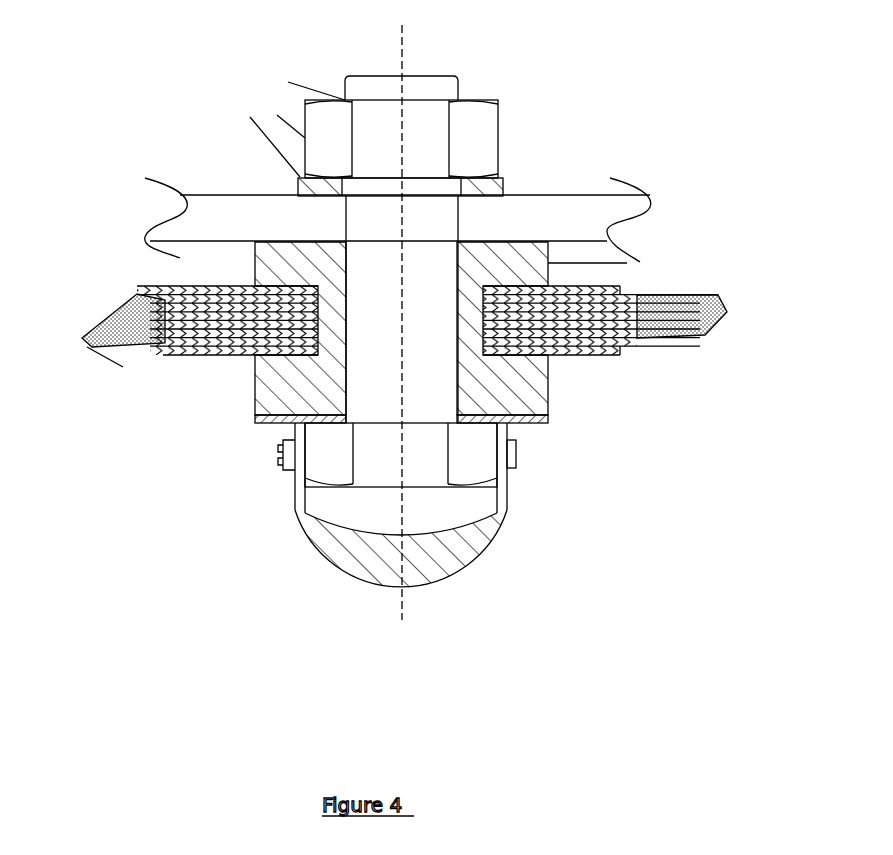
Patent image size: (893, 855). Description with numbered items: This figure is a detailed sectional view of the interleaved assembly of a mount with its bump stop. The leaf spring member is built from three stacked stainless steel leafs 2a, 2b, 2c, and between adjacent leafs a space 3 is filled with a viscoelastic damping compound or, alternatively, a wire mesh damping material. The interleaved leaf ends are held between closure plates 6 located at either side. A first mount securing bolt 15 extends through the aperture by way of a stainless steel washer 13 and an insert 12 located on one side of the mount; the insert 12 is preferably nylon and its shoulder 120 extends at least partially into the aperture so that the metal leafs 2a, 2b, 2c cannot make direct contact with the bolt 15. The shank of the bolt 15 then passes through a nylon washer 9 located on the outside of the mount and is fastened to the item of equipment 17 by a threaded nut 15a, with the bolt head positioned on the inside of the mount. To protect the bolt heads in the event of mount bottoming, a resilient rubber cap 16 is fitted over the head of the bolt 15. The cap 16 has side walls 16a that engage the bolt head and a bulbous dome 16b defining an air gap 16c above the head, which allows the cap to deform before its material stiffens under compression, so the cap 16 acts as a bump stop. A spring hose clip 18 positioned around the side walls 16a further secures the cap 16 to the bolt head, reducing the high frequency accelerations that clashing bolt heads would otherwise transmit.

The leaf 2a is at (185, 307).
The leaf 2b is at (215, 323).
The leaf 2c is at (138, 340).
The space 3 is at (97, 328).
The closure plate 6 is at (175, 258).
The washer 9 is at (628, 257).
The insert 12 is at (550, 407).
The washer 13 is at (250, 425).
The first mount securing bolt 15 is at (457, 280).
The threaded nut 15a is at (488, 127).
The cap 16 is at (399, 559).
The side walls 16a is at (507, 513).
The bulbous dome 16b is at (420, 578).
The air gap 16c is at (432, 522).
The item of equipment 17 is at (545, 195).
The spring hose clip 18 is at (282, 472).
The shoulder 120 is at (470, 337).